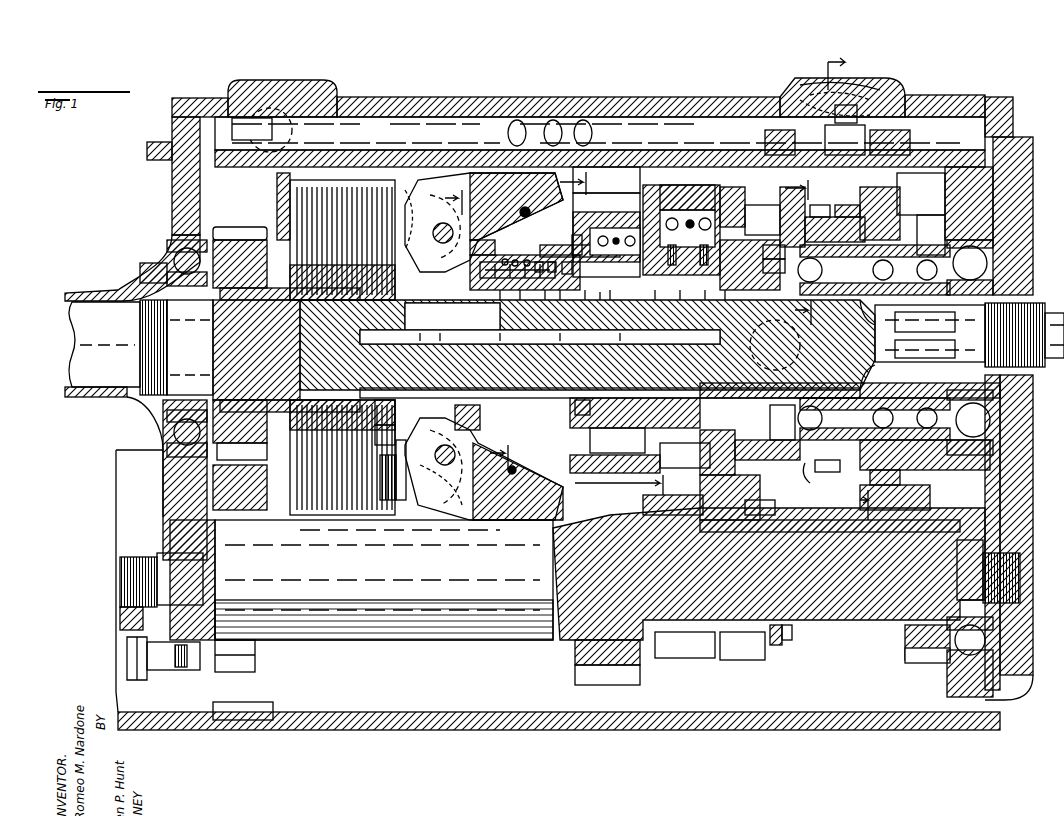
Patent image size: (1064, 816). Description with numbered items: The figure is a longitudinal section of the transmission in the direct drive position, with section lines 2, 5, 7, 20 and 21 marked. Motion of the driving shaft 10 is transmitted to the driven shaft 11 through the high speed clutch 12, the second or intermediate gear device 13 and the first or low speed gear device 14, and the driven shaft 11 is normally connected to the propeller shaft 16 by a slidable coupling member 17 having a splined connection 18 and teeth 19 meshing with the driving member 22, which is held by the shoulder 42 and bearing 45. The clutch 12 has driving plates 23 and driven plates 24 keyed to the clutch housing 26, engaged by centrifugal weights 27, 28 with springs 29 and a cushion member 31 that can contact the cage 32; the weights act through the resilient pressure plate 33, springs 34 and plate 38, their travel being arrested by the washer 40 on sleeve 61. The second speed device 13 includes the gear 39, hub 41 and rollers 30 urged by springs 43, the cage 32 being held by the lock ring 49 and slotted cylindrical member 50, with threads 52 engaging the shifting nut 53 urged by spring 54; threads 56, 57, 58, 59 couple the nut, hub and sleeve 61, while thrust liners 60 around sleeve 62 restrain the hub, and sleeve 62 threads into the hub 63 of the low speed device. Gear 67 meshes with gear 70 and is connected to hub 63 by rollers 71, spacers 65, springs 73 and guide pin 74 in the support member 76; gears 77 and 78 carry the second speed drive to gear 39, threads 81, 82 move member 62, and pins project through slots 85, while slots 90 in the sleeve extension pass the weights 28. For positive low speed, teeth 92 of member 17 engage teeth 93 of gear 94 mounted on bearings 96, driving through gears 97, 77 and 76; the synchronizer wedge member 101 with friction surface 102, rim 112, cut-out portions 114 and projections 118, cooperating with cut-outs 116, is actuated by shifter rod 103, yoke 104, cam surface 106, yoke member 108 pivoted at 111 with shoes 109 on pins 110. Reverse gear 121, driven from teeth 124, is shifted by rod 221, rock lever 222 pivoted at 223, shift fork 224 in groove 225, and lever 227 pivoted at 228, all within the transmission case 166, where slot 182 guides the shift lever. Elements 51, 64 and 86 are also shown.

The section line 2 is at (476, 327).
The section line 5 is at (609, 332).
The section line 7 is at (674, 347).
The driving shaft 10 is at (80, 338).
The driven shaft 11 is at (587, 345).
The high speed clutch 12 is at (280, 180).
The second or intermediate gear device 13 is at (606, 235).
The first or low speed gear device 14 is at (687, 192).
The propeller shaft 16 is at (1035, 300).
The slidable coupling member 17 is at (872, 212).
The splined connection 18 is at (847, 211).
The teeth 19 is at (774, 252).
The section line 20 is at (840, 285).
The section line 21 is at (797, 250).
The driving member 22 is at (774, 266).
The driving plates 23 is at (387, 413).
The driven plates 24 is at (390, 435).
The clutch housing 26 is at (385, 505).
The centrifugal weights 27 is at (465, 190).
The centrifugal weights 28 is at (460, 505).
The springs 29 is at (516, 468).
The rollers 30 is at (635, 425).
The cushion member 31 is at (530, 210).
The cage 32 is at (544, 254).
The resilient pressure plate 33 is at (405, 500).
The springs 34 is at (412, 195).
The plate 38 is at (388, 505).
The gear 39 is at (596, 195).
The washer 40 is at (540, 323).
The hub 41 is at (655, 298).
The shoulder 42 is at (874, 419).
The springs 43 is at (616, 236).
The bearing 45 is at (782, 422).
The lock ring 49 is at (576, 232).
The slotted cylindrical member 50 is at (443, 485).
The collar 51 is at (482, 244).
The internal threads 52 is at (515, 260).
The shifting nut 53 is at (527, 260).
The spring 54 is at (555, 258).
The internal threads 56 is at (520, 298).
The external threads 57 is at (500, 298).
The internal threads 58 is at (560, 298).
The external threads 59 is at (545, 298).
The thrust liners 60 is at (665, 390).
The sleeve 61 is at (585, 298).
The sleeve 62 is at (610, 298).
The hub 63 is at (705, 298).
The ring 64 is at (604, 311).
The spacers 65 is at (685, 455).
The gear 67 is at (730, 196).
The gear 70 is at (678, 658).
The rollers 71 is at (703, 454).
The springs 73 is at (688, 219).
The guide pin 74 is at (688, 242).
The support member 76 is at (242, 232).
The gear 77 is at (270, 708).
The gear 78 is at (575, 676).
The threads 81 is at (680, 298).
The threads 82 is at (725, 305).
The slots 85 is at (560, 445).
The ball 86 is at (505, 258).
The slots 90 is at (467, 418).
The teeth 92 is at (825, 205).
The teeth 93 is at (931, 235).
The gear 94 is at (930, 182).
The bearings 96 is at (925, 322).
The gear 97 is at (905, 662).
The wedge member 101 is at (862, 495).
The friction surface 102 is at (870, 482).
The shifter rod 103 is at (500, 135).
The yoke 104 is at (755, 205).
The cam surface 106 is at (845, 150).
The yoke member 108 is at (790, 150).
The shoes 109 is at (871, 345).
The pins 110 is at (930, 333).
The pivot 111 is at (925, 345).
The rim 112 is at (885, 160).
The cut-out portions 114 is at (874, 270).
The cut-out portions 116 is at (815, 475).
The inwardly projecting portions 118 is at (842, 463).
The reverse gear 121 is at (748, 658).
The teeth 124 is at (790, 510).
The transmission case 166 is at (185, 205).
The slot 182 is at (235, 105).
The rod 221 is at (865, 105).
The rock lever 222 is at (790, 92).
The pivot 223 is at (762, 345).
The shift fork 224 is at (780, 648).
The groove 225 is at (790, 640).
The lever 227 is at (860, 90).
The pivot 228 is at (875, 78).